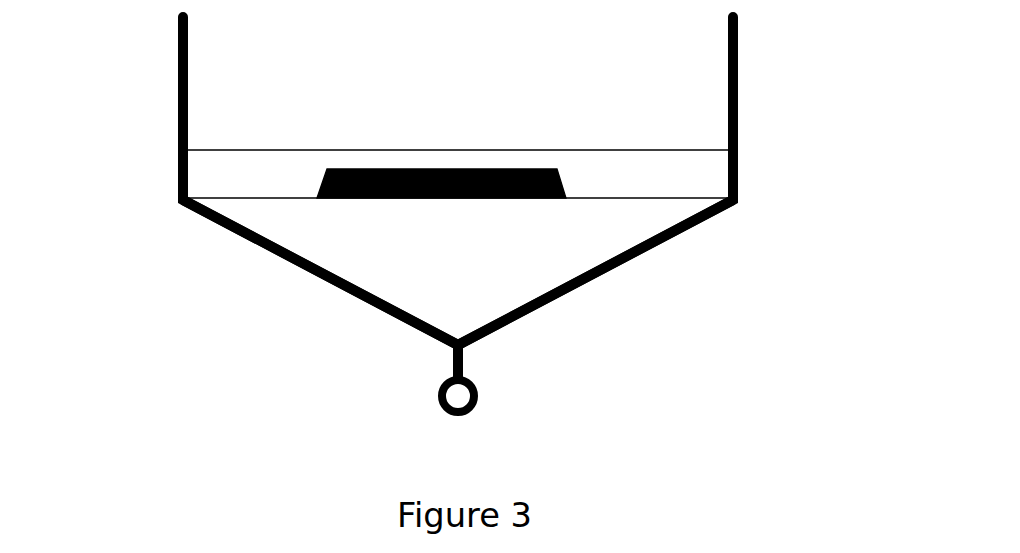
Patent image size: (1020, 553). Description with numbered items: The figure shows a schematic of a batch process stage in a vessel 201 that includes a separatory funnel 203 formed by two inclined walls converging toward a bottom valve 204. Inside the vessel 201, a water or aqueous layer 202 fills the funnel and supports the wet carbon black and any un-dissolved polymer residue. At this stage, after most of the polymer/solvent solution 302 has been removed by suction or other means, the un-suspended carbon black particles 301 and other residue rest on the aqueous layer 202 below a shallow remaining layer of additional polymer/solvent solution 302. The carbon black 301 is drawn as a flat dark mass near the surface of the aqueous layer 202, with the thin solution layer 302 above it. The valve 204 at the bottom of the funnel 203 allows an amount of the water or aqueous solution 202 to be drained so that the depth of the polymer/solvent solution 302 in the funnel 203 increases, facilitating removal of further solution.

The vessel 201 is at (178, 100).
The water or aqueous layer 202 is at (552, 268).
The separatory funnel 203 is at (288, 262).
The valve 204 is at (478, 404).
The carbon black particles 301 is at (317, 197).
The polymer/solvent solution 302 is at (702, 180).